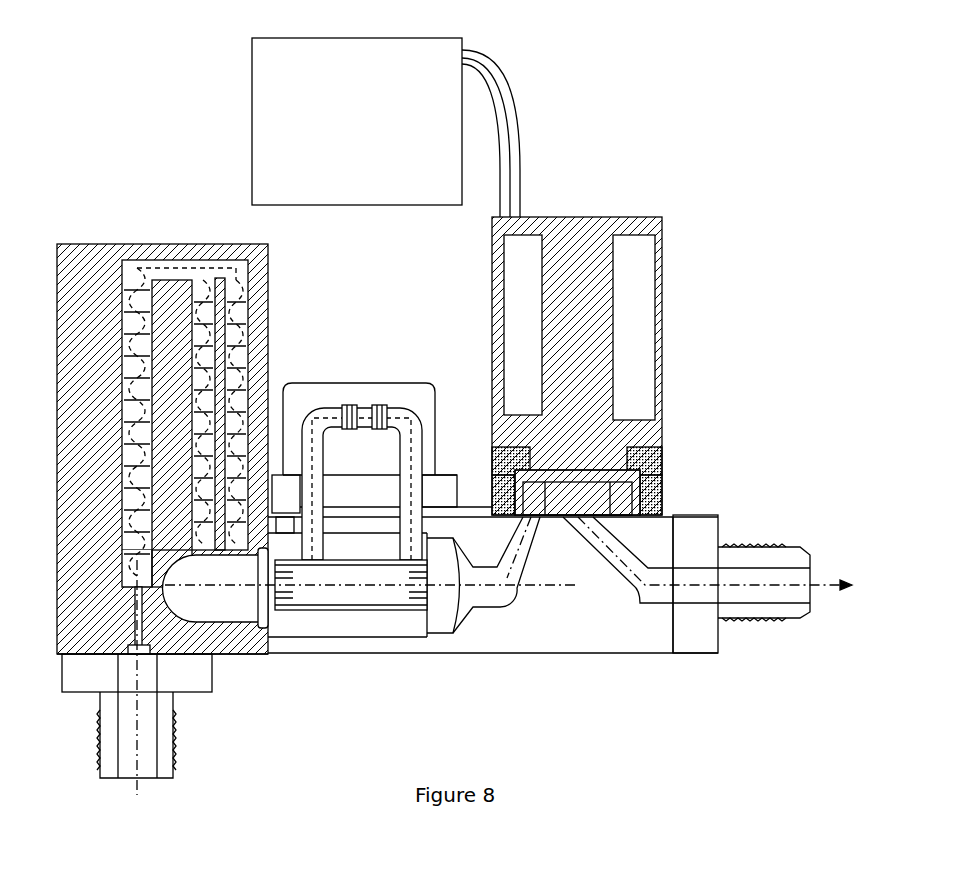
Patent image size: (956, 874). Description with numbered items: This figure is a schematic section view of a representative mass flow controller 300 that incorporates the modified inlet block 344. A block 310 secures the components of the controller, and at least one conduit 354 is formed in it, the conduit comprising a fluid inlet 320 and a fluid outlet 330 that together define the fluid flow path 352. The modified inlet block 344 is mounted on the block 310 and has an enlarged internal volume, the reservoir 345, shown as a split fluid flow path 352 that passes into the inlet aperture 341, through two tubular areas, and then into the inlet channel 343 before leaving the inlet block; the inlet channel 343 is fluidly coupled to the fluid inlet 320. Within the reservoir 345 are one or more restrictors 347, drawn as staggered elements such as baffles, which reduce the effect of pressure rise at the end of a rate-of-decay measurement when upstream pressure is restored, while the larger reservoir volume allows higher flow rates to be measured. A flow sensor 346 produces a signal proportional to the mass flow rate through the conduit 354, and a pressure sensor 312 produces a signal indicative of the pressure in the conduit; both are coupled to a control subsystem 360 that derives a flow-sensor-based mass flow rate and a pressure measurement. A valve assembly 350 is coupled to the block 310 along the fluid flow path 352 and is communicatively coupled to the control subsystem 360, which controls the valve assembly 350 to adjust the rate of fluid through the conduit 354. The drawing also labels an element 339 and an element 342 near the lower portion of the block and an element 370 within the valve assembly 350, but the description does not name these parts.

The mass flow controller 300 is at (192, 181).
The block 310 is at (617, 633).
The pressure sensor 312 is at (292, 507).
The fluid inlet 320 is at (167, 778).
The fluid outlet 330 is at (783, 620).
The inlet flange 339 is at (173, 697).
The inlet aperture 341 is at (147, 620).
The tube 342 is at (340, 608).
The inlet channel 343 is at (225, 610).
The modified inlet block 344 is at (260, 312).
The reservoir 345 is at (247, 375).
The flow sensor 346 is at (352, 417).
The restrictors 347 is at (207, 312).
The valve assembly 350 is at (570, 293).
The fluid flow path 352 is at (155, 270).
The conduit 354 is at (500, 610).
The control subsystem 360 is at (376, 129).
The pole piece 370 is at (593, 493).